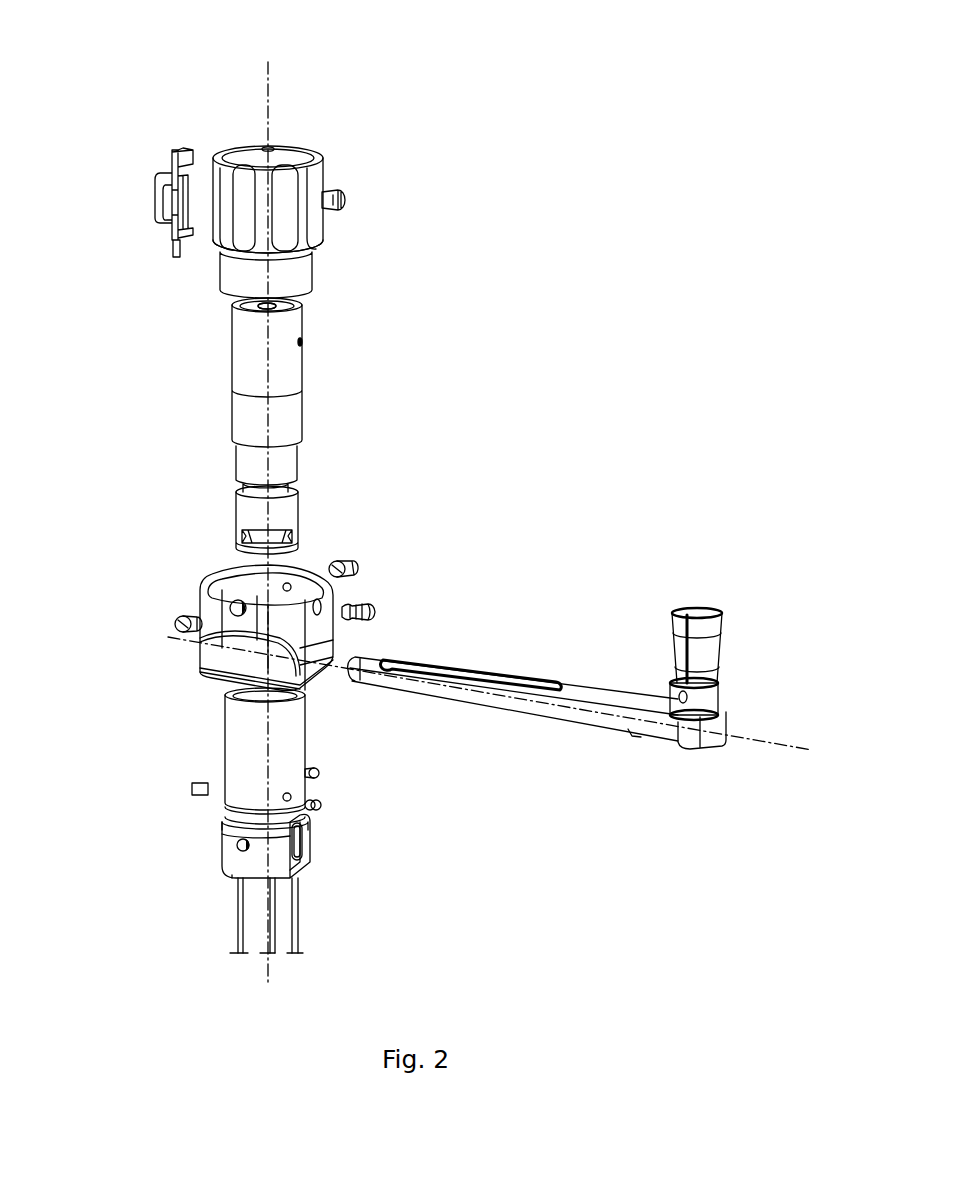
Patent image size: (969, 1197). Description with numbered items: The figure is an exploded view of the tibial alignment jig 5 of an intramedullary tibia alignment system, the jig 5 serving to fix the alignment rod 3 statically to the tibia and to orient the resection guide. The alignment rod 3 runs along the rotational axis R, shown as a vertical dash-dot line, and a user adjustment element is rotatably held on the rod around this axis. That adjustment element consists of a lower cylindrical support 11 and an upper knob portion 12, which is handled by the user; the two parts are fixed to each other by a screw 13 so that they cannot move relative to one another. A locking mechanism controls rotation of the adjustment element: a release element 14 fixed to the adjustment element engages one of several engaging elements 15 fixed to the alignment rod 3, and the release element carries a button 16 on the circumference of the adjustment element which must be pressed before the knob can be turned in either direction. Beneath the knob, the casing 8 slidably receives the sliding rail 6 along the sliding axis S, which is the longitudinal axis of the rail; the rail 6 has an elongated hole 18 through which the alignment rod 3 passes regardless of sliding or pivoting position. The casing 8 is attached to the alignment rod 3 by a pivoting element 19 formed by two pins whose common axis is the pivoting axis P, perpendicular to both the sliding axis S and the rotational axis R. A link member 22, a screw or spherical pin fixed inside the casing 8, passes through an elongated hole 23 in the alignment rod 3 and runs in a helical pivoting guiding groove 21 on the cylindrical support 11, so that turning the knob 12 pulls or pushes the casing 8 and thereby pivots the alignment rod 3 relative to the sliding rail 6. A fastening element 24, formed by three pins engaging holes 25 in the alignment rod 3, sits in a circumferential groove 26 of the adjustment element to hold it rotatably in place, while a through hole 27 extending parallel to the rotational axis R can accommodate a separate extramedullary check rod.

The alignment rod 3 is at (170, 906).
The tibial alignment jig 5 is at (604, 248).
The sliding rail 6 is at (601, 676).
The casing 8 is at (142, 609).
The cylindrical support 11 is at (283, 362).
The knob portion 12 is at (300, 150).
The screw 13 is at (347, 200).
The release element 14 is at (160, 171).
The engaging element 15 is at (476, 676).
The button 16 is at (170, 291).
The elongated hole 18 is at (328, 656).
The pivoting element 19 is at (186, 617).
The pivoting guiding groove 21 is at (243, 535).
The link member 22 is at (203, 568).
The hole 23 is at (316, 851).
The fastening element 24 is at (165, 786).
The holes 25 is at (283, 798).
The groove 26 is at (298, 486).
The through hole 27 is at (298, 312).
The rotational axis R is at (269, 84).
The pivoting axis P is at (165, 634).
The sliding axis S is at (734, 736).